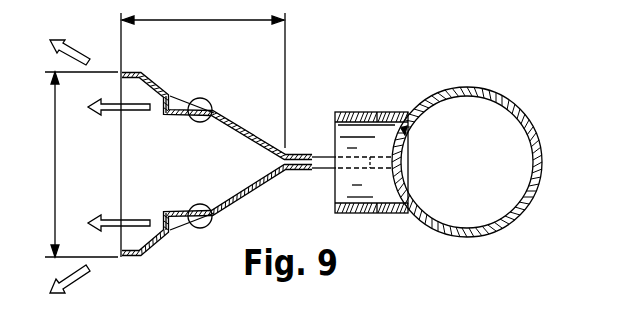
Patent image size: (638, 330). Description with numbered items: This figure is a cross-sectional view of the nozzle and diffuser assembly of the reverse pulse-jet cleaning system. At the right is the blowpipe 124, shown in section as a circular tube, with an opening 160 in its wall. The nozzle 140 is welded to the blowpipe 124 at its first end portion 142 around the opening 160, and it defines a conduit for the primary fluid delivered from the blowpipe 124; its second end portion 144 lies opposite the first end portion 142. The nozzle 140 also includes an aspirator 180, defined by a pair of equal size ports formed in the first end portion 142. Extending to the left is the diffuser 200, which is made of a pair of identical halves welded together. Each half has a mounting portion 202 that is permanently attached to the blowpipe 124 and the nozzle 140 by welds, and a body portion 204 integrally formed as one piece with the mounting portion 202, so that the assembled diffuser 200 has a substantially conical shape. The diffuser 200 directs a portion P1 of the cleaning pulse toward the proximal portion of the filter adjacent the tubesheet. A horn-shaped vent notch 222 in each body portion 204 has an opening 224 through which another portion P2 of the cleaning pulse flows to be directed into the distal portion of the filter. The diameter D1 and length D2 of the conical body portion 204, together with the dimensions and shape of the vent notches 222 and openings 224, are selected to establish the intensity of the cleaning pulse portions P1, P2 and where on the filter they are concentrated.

The blowpipe 124 is at (497, 90).
The nozzle 140 is at (362, 213).
The first end portion 142 is at (400, 215).
The second end portion 144 is at (350, 112).
The opening 160 is at (406, 131).
The aspirator 180 is at (385, 112).
The diffuser 200 is at (228, 97).
The mounting portion 202 is at (314, 150).
The body portion 204 is at (143, 72).
The vent notch 222 is at (207, 124).
The opening 224 is at (160, 106).
The diameter D1 is at (56, 163).
The length D2 is at (232, 19).
The cleaning pulse portion P1 is at (72, 44).
The cleaning pulse portion P2 is at (110, 114).